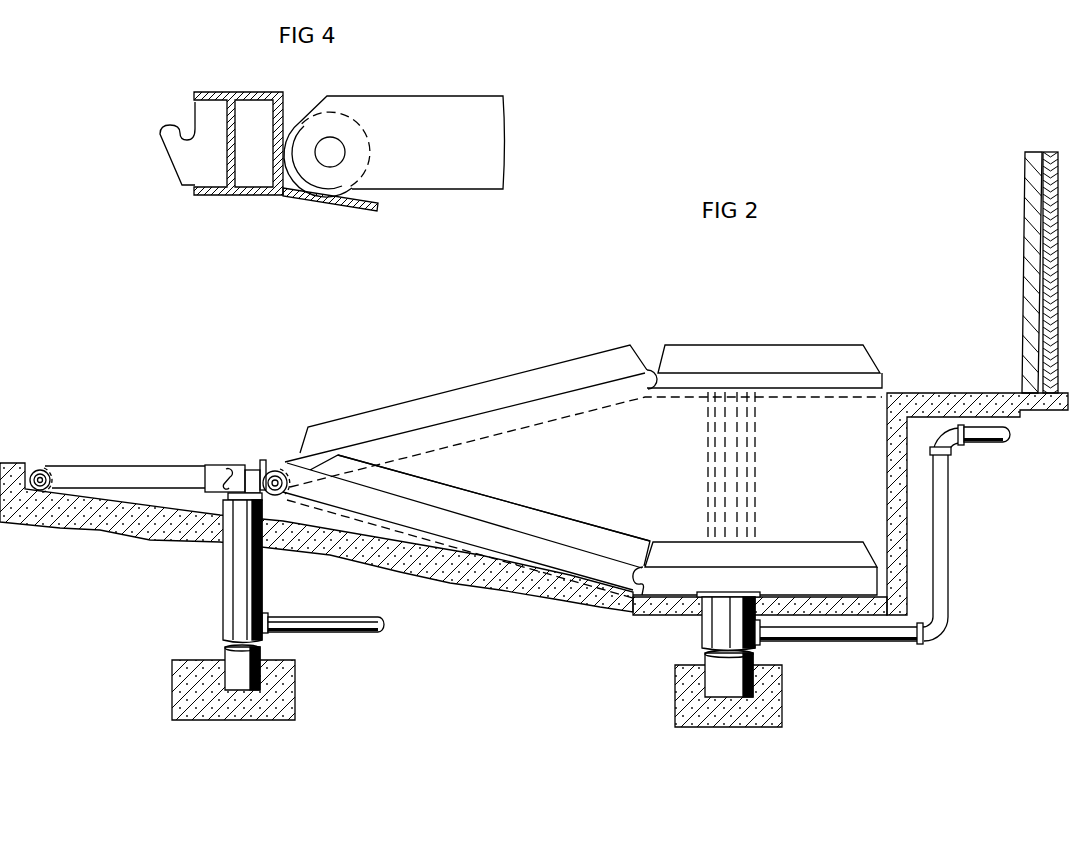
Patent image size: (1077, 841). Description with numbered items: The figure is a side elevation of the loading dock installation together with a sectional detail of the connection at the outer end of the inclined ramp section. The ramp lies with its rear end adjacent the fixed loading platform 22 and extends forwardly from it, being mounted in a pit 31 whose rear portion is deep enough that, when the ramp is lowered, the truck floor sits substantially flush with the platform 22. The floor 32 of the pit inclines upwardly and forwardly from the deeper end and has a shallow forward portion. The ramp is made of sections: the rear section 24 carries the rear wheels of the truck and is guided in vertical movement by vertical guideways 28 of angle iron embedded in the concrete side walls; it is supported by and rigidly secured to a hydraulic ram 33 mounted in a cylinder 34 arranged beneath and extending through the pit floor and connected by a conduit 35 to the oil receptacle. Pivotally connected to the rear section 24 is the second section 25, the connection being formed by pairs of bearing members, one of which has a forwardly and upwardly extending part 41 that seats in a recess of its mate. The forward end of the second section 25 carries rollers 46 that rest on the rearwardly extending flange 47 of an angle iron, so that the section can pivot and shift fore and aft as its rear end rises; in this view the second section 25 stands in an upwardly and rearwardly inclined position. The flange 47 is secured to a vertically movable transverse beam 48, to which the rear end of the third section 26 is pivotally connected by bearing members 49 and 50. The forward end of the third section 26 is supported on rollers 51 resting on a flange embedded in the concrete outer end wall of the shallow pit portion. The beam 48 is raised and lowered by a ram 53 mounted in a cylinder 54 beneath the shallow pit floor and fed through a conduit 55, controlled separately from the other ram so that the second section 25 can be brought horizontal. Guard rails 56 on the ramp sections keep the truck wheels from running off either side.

In FIG. 2, the platform 22 is at (955, 392).
In FIG. 2, the rear section 24 is at (868, 382).
In FIG. 4, the second section 25 is at (462, 175).
In FIG. 2, the second section 25 is at (453, 422).
In FIG. 2, the third section 26 is at (118, 466).
In FIG. 2, the vertical guideways 28 is at (748, 438).
In FIG. 2, the pit 31 is at (640, 603).
In FIG. 2, the floor of the pit 32 is at (150, 499).
In FIG. 2, the ram 33 is at (757, 490).
In FIG. 2, the cylinder 34 is at (723, 678).
In FIG. 2, the conduit 35 is at (938, 583).
In FIG. 2, the forwardly and upwardly extending part 41 is at (648, 390).
In FIG. 4, the rollers 46 is at (352, 201).
In FIG. 4, the flange 47 is at (312, 198).
In FIG. 4, the transverse beam 48 is at (232, 192).
In FIG. 4, the bearing member 49 is at (188, 150).
In FIG. 2, the bearing member 49 is at (226, 480).
In FIG. 2, the bearing member 50 is at (229, 469).
In FIG. 2, the rollers 51 is at (44, 470).
In FIG. 2, the ram 53 is at (238, 506).
In FIG. 2, the cylinder 54 is at (240, 584).
In FIG. 2, the conduit 55 is at (337, 623).
In FIG. 2, the guard rails 56 is at (615, 538).